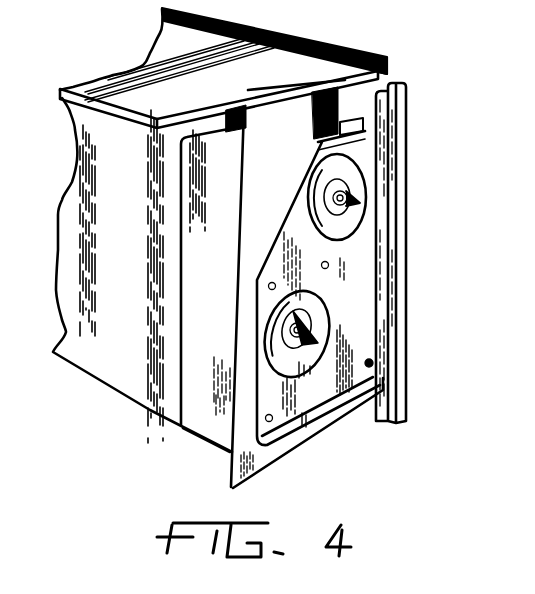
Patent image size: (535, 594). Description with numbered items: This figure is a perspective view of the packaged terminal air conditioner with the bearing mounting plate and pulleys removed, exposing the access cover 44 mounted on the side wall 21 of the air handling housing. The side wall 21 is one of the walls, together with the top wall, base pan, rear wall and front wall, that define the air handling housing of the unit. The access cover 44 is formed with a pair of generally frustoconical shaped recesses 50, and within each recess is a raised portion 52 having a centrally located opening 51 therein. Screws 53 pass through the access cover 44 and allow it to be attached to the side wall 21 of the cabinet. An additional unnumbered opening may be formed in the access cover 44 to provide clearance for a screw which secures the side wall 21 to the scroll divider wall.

The side wall 21 is at (328, 103).
The access cover 44 is at (357, 275).
The frustoconical shaped recesses 50 is at (362, 171).
The opening 51 is at (318, 168).
The raised portion 52 is at (350, 190).
The screws 53 is at (269, 285).